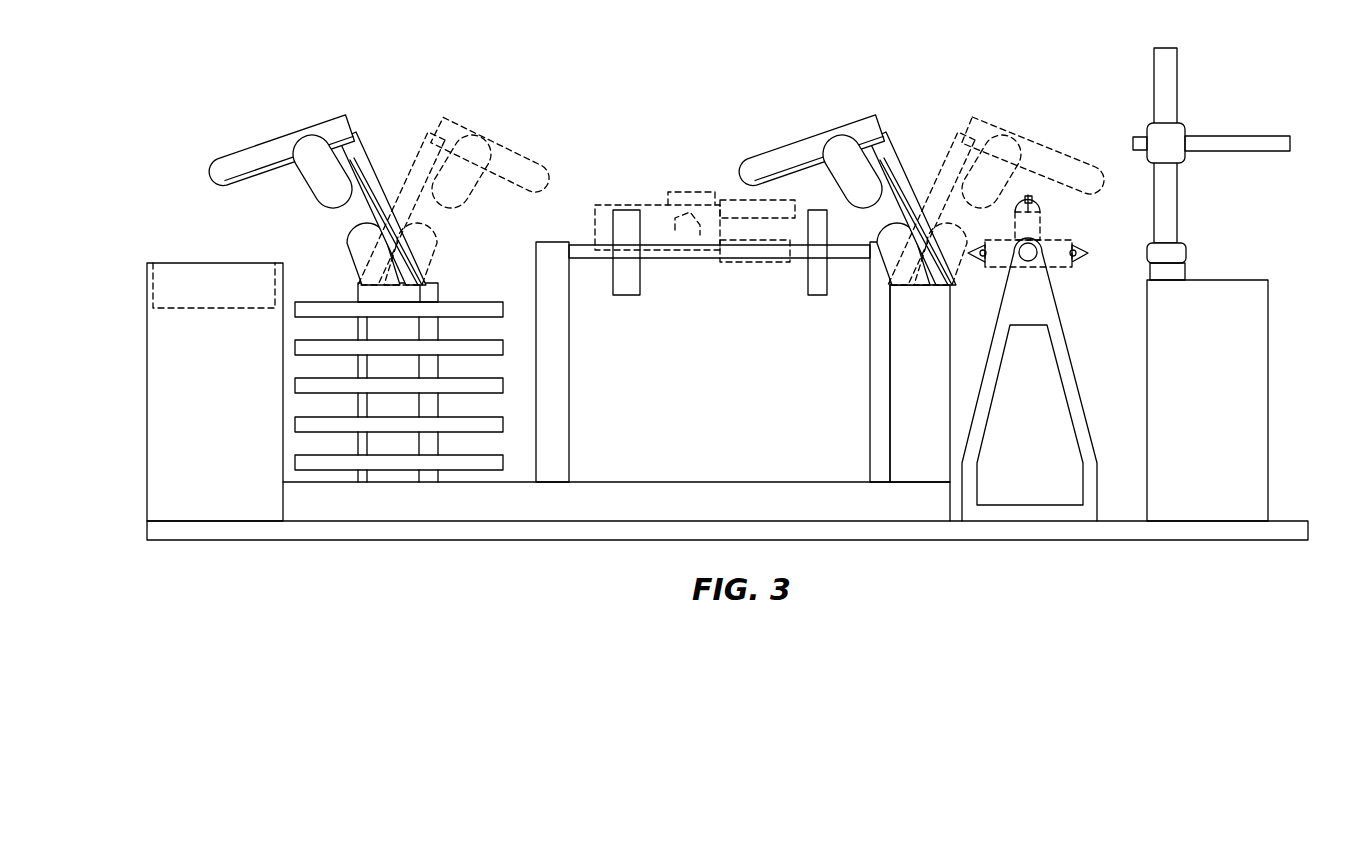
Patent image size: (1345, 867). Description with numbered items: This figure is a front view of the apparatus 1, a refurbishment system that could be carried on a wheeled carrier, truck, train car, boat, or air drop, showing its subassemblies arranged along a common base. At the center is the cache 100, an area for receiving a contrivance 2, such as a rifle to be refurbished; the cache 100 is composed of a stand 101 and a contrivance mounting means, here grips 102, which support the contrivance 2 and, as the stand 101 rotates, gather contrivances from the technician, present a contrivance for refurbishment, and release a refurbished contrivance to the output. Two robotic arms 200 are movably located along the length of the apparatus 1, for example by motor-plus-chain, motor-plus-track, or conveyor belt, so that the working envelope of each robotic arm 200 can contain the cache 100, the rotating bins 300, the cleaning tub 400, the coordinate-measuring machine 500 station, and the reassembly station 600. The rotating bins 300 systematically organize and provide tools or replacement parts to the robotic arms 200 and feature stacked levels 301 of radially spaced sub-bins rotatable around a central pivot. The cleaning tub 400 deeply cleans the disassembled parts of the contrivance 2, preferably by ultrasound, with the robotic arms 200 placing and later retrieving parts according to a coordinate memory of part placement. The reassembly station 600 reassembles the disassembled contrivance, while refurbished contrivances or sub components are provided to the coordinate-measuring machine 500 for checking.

The apparatus 1 is at (782, 38).
The contrivance 2 is at (752, 253).
The cache 100 is at (655, 225).
The stand 101 is at (553, 360).
The grips 102 is at (817, 280).
The robotic arms 200 is at (312, 130).
The rotating bins 300 is at (462, 300).
The stacked levels 301 is at (305, 462).
The cleaning tub 400 is at (215, 287).
The coordinate-measuring machine 500 is at (1162, 137).
The reassembly station 600 is at (1030, 242).